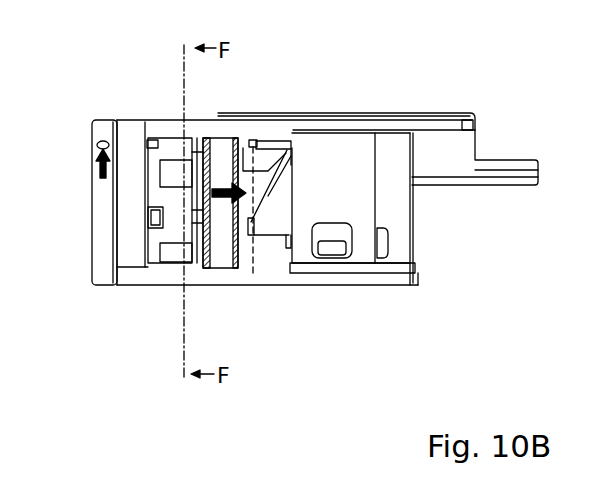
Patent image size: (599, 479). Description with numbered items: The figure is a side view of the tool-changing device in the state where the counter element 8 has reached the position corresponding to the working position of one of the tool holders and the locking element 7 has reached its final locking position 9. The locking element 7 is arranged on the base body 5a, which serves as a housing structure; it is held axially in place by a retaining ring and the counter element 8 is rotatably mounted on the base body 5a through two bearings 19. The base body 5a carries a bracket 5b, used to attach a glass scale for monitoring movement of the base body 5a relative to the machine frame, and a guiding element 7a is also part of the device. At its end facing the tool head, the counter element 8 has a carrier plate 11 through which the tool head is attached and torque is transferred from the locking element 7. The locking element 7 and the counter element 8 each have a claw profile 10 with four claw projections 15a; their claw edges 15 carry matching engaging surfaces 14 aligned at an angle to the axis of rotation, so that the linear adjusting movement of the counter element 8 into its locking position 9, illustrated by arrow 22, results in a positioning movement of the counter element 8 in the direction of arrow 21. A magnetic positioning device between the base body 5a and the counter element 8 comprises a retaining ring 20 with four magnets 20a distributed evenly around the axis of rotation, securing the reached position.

The base body 5a is at (173, 123).
The bracket 5b is at (465, 113).
The locking element 7 is at (355, 195).
The guiding element 7a is at (390, 265).
The counter element 8 is at (240, 138).
The locking position 9 is at (248, 270).
The claw profile 10 is at (298, 137).
The carrier plate 11 is at (100, 212).
The engaging surfaces 14 is at (283, 245).
The claw edges 15 is at (283, 140).
The claw projections 15a is at (280, 217).
The bearings 19 is at (130, 252).
The retaining ring 20 is at (178, 192).
The magnets 20a is at (175, 255).
The arrow 21 is at (94, 158).
The arrow 22 is at (238, 265).